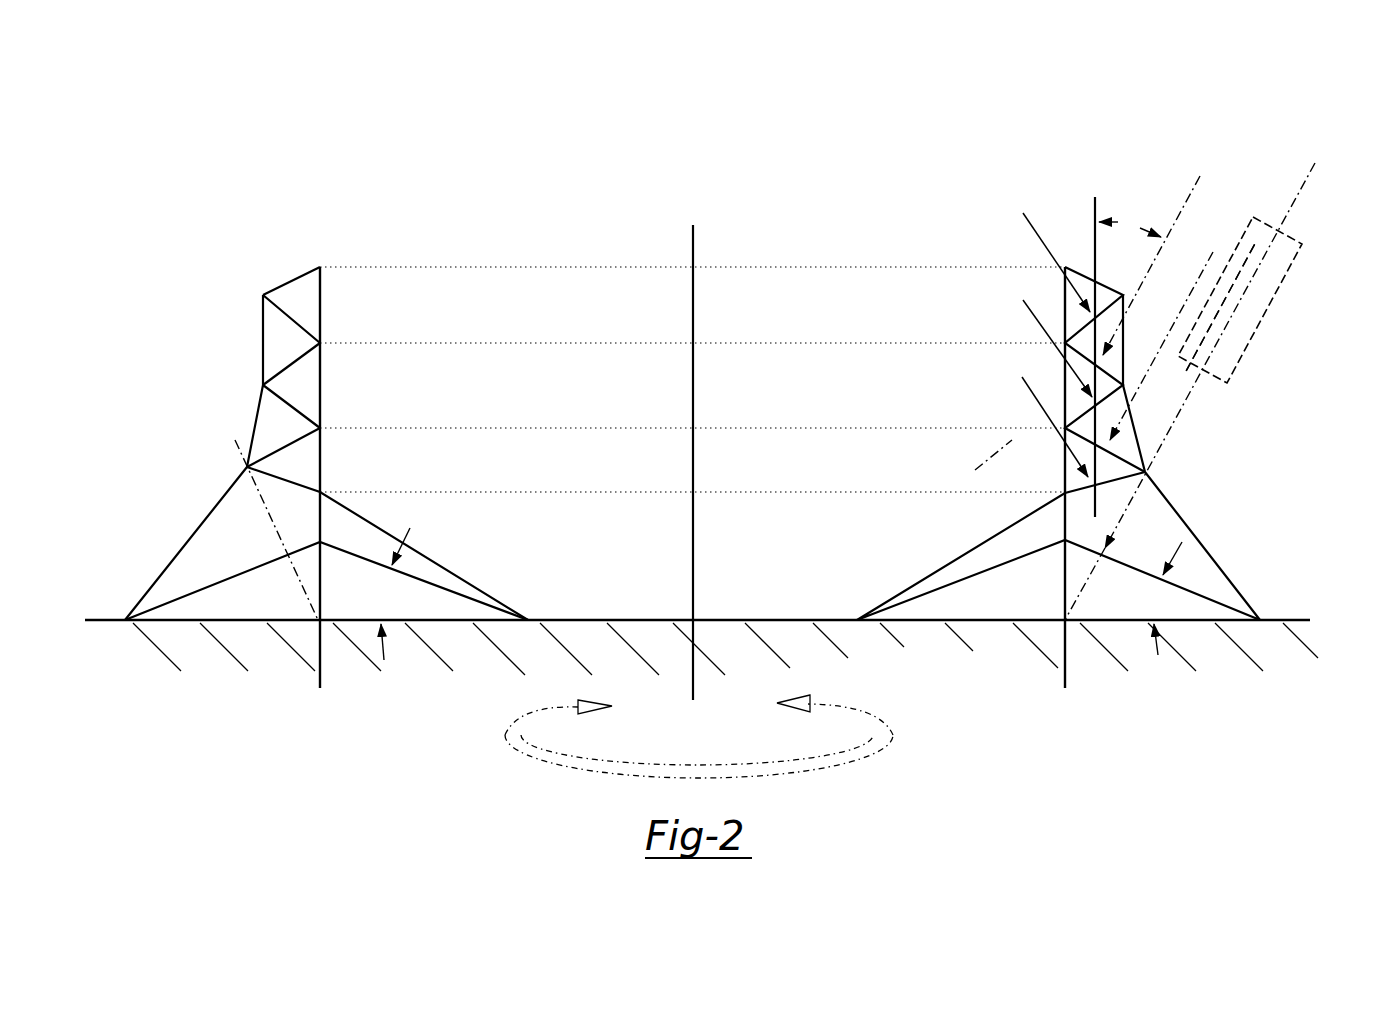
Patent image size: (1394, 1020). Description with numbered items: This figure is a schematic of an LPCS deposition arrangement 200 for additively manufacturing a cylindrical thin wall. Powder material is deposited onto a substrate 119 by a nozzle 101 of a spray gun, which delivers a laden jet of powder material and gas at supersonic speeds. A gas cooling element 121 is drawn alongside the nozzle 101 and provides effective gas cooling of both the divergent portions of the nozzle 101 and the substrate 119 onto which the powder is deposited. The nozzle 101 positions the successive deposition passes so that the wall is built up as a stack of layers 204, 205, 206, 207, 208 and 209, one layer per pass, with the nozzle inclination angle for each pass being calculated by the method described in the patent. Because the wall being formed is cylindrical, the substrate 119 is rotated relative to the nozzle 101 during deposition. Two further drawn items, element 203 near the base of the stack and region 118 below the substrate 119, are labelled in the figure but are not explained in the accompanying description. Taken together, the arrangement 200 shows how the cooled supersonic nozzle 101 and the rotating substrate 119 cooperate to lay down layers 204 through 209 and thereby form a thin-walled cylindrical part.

The deposition arrangement 200 is at (293, 148).
The base strut 203 is at (283, 613).
The layer 204 is at (326, 543).
The layer 205 is at (310, 461).
The layer 206 is at (282, 423).
The layer 207 is at (312, 384).
The layer 208 is at (264, 334).
The layer 209 is at (326, 288).
The substrate 119 is at (755, 618).
The ground 118 is at (965, 680).
The nozzle 101 is at (1286, 290).
The gas cooling element 121 is at (1278, 287).